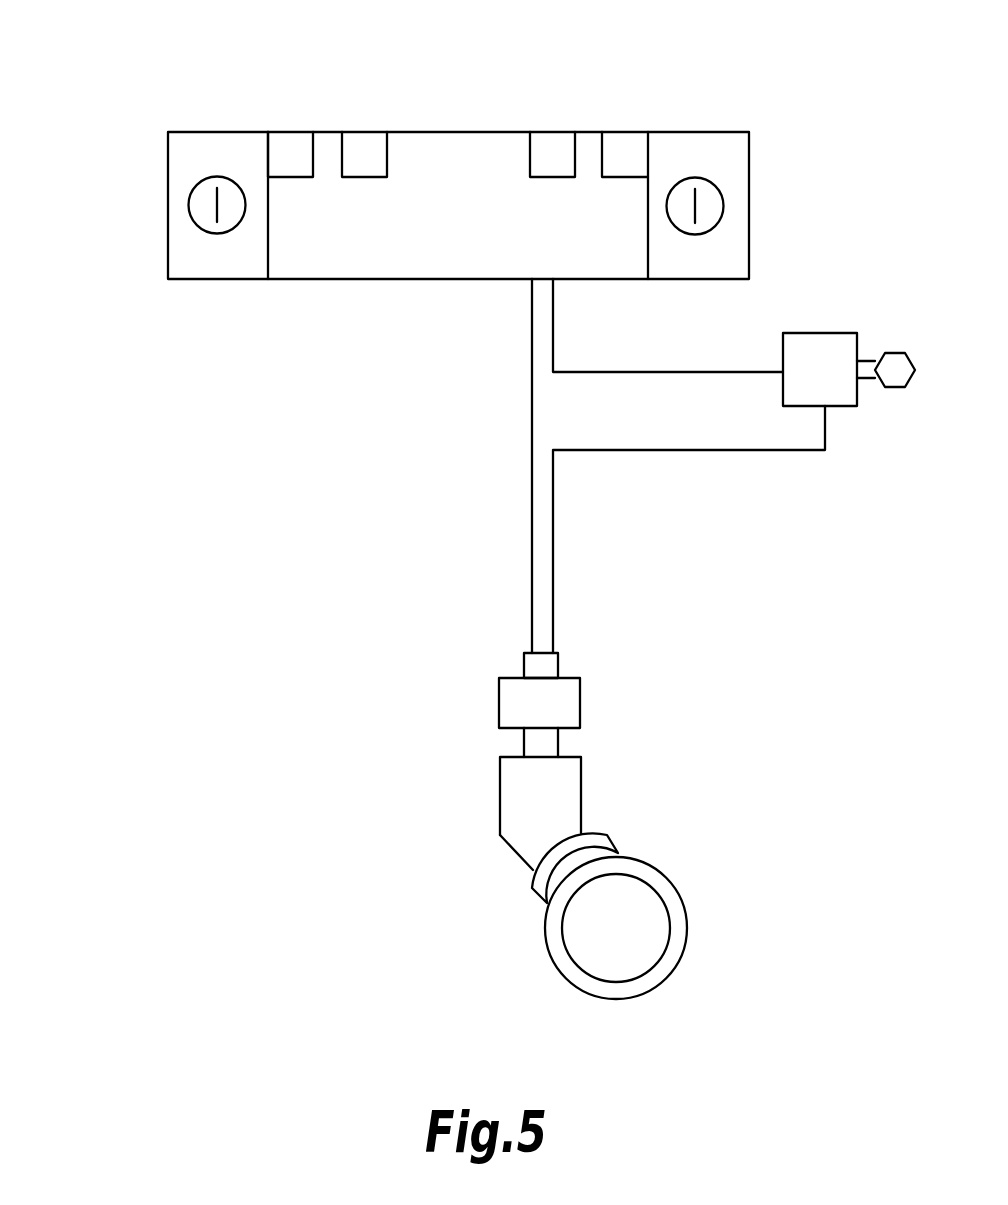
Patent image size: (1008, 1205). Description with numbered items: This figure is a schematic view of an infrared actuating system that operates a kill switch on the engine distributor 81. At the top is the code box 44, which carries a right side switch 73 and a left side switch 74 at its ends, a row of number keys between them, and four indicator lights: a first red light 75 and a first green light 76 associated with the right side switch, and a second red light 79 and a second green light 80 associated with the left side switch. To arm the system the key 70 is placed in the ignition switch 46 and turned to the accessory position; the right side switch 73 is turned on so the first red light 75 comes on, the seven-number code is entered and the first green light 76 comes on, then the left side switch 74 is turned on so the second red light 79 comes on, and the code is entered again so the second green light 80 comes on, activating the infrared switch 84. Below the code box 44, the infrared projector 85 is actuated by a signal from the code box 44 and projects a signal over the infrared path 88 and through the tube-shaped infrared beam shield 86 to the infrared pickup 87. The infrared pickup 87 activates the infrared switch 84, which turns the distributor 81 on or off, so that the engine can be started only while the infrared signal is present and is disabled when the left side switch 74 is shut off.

The code box 44 is at (342, 263).
The second green light 80 is at (298, 145).
The second red light 79 is at (375, 147).
The first red light 75 is at (548, 145).
The first green light 76 is at (620, 143).
The left side switch 74 is at (203, 205).
The right side switch 73 is at (710, 203).
The ignition switch 46 is at (832, 343).
The key 70 is at (893, 386).
The infrared projector 85 is at (513, 703).
The infrared path 88 is at (538, 745).
The infrared beam shield 86 is at (517, 800).
The infrared pickup 87 is at (531, 864).
The infrared switch 84 is at (603, 844).
The distributor 81 is at (587, 952).